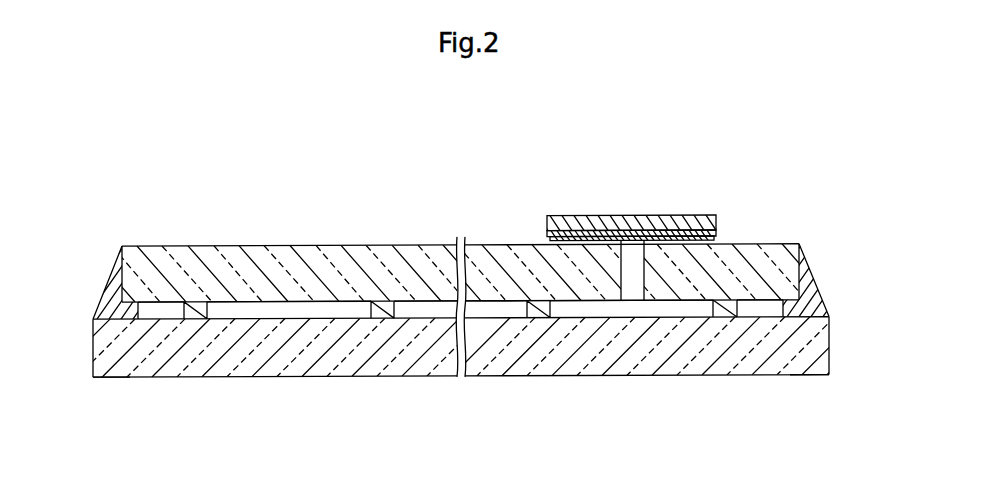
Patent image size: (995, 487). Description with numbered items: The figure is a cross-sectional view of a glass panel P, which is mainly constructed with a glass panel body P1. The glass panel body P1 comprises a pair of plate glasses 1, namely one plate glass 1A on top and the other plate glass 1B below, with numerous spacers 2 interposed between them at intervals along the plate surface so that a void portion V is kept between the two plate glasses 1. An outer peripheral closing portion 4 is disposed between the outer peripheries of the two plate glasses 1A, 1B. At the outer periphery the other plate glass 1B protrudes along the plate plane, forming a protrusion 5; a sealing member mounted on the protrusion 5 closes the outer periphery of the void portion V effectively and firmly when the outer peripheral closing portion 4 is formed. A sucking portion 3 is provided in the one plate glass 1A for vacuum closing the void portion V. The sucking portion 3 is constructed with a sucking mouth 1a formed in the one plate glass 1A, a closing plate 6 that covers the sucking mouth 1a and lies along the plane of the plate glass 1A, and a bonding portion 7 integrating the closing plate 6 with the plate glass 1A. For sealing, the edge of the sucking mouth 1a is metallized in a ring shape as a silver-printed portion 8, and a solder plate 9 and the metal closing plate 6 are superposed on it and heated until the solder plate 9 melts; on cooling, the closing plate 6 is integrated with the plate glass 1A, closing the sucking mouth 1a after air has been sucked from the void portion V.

The glass panel P is at (202, 205).
The glass panel body P1 is at (491, 234).
The plate glasses 1 is at (468, 318).
The one plate glass 1A is at (277, 246).
The other plate glass 1B is at (293, 377).
The sucking mouth 1a is at (637, 238).
The spacers 2 is at (193, 310).
The sucking portion 3 is at (586, 205).
The outer peripheral closing portion 4 is at (99, 302).
The protrusion 5 is at (102, 377).
The closing plate 6 is at (687, 217).
The bonding portion 7 is at (653, 232).
The silver-printed portion 8 is at (718, 238).
The solder plate 9 is at (631, 233).
The void portion V is at (303, 311).